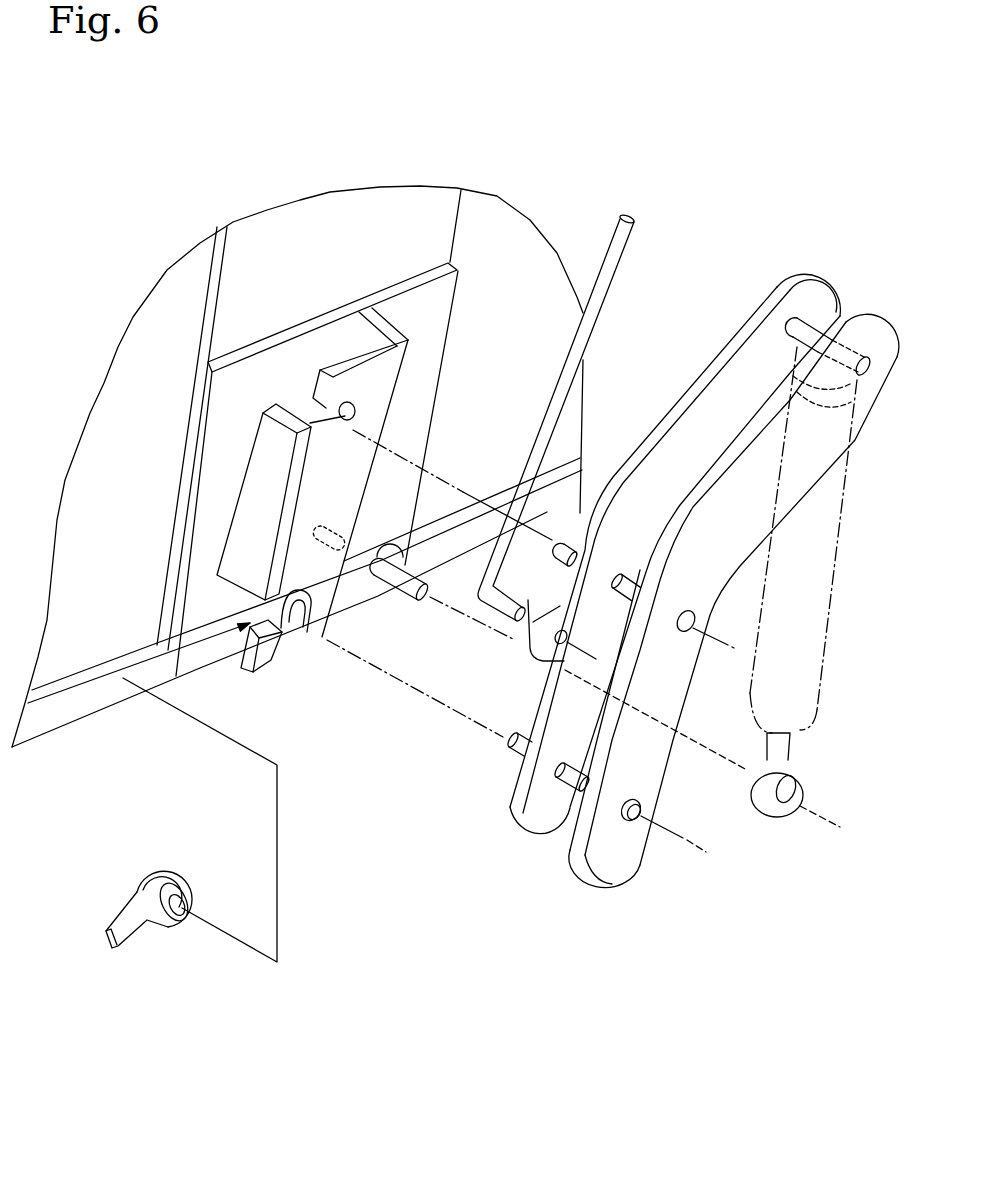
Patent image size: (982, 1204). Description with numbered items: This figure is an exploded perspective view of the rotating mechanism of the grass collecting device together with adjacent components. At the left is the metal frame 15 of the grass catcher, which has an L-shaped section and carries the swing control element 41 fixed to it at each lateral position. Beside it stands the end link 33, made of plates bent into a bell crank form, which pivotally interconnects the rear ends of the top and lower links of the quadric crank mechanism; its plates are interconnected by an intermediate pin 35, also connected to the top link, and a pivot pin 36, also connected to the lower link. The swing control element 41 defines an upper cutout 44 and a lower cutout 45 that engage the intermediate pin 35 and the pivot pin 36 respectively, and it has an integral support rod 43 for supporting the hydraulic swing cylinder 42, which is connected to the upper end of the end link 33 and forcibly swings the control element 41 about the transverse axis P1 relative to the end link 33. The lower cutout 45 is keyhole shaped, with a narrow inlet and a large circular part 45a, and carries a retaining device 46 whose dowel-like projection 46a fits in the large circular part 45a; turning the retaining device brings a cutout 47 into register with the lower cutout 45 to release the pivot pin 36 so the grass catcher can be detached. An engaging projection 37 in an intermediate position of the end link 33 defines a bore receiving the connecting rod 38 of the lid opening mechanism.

The frame 15 is at (96, 695).
The end link 33 is at (607, 852).
The intermediate pin 35 is at (623, 574).
The pivot pin 36 is at (522, 762).
The engaging projection 37 is at (533, 657).
The connecting rod 38 is at (603, 291).
The swing control element 41 is at (326, 468).
The hydraulic swing cylinder 42 is at (822, 660).
The support rod 43 is at (404, 588).
The upper cutout 44 is at (356, 414).
The lower cutout 45 is at (281, 643).
The large circular part 45a is at (321, 641).
The retaining device 46 is at (124, 887).
The dowel-like projection 46a is at (165, 877).
The cutout 47 is at (168, 923).
The transverse axis P1 is at (683, 840).